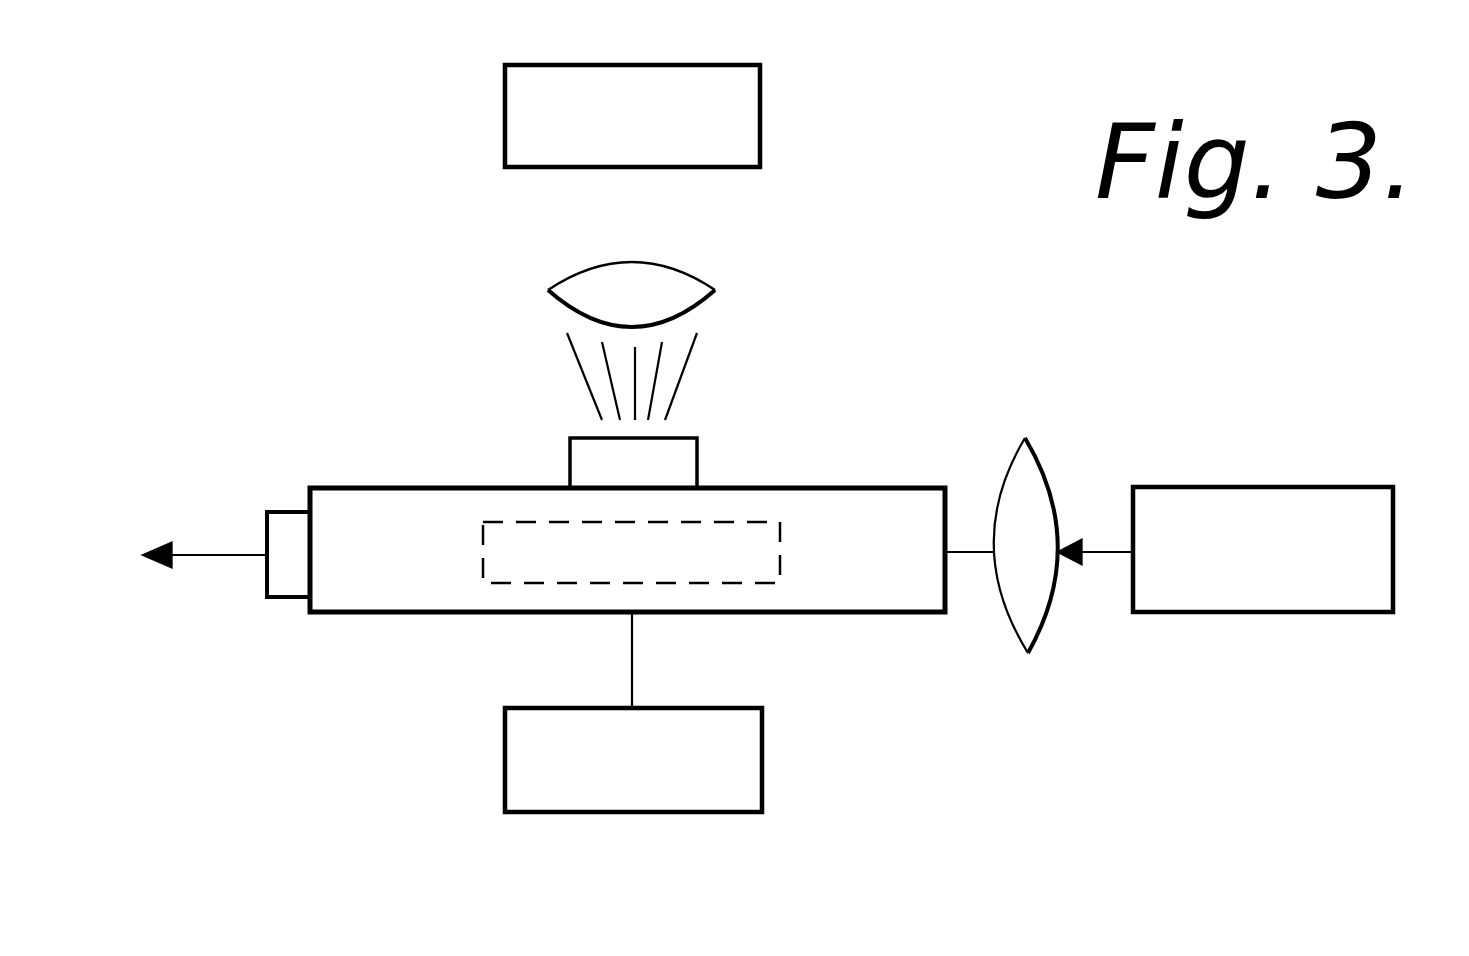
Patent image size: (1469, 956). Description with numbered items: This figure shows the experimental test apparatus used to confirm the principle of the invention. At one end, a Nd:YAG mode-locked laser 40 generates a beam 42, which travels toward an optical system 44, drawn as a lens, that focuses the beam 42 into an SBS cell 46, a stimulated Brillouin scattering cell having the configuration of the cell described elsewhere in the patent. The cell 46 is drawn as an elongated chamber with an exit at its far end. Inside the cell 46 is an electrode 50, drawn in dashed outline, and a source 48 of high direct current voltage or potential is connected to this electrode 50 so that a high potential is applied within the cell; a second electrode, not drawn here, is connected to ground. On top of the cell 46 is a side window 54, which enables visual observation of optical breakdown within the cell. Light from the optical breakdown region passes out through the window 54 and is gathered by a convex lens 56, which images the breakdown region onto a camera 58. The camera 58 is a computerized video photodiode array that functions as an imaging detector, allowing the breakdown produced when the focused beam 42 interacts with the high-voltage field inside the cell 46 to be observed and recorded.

The Nd:YAG mode-locked laser 40 is at (1178, 485).
The beam 42 is at (1105, 552).
The optical system 44 is at (1012, 458).
The SBS cell 46 is at (450, 602).
The source of high direct current voltage 48 is at (762, 753).
The electrode 50 is at (733, 587).
The side window 54 is at (568, 460).
The convex lens 56 is at (705, 275).
The camera 58 is at (760, 120).